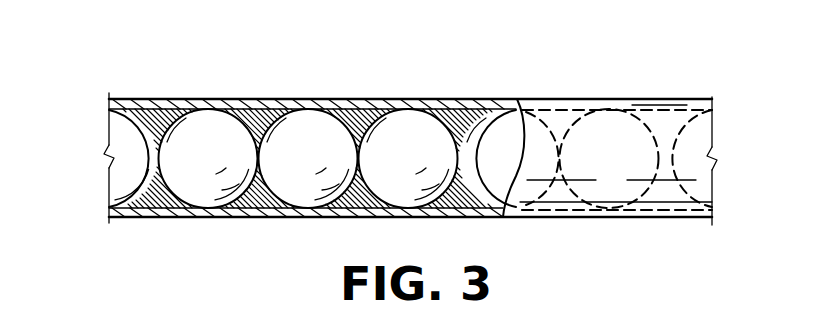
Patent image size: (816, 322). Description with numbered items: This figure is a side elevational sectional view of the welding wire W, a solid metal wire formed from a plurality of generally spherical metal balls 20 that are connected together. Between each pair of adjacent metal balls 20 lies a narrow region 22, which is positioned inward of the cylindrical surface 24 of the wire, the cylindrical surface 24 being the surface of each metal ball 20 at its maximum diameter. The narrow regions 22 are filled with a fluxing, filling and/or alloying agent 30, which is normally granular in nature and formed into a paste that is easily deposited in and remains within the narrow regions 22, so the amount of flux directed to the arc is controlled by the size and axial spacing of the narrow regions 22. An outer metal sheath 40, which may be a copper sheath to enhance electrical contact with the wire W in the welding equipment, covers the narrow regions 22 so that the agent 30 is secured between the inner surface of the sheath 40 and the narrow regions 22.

The spherical metal ball 20 is at (188, 149).
The narrow region 22 is at (370, 117).
The cylindrical surface 24 is at (509, 107).
The fluxing, filling and/or alloying agent 30 is at (267, 110).
The metal sheath 40 is at (407, 101).
The welding wire W is at (259, 226).